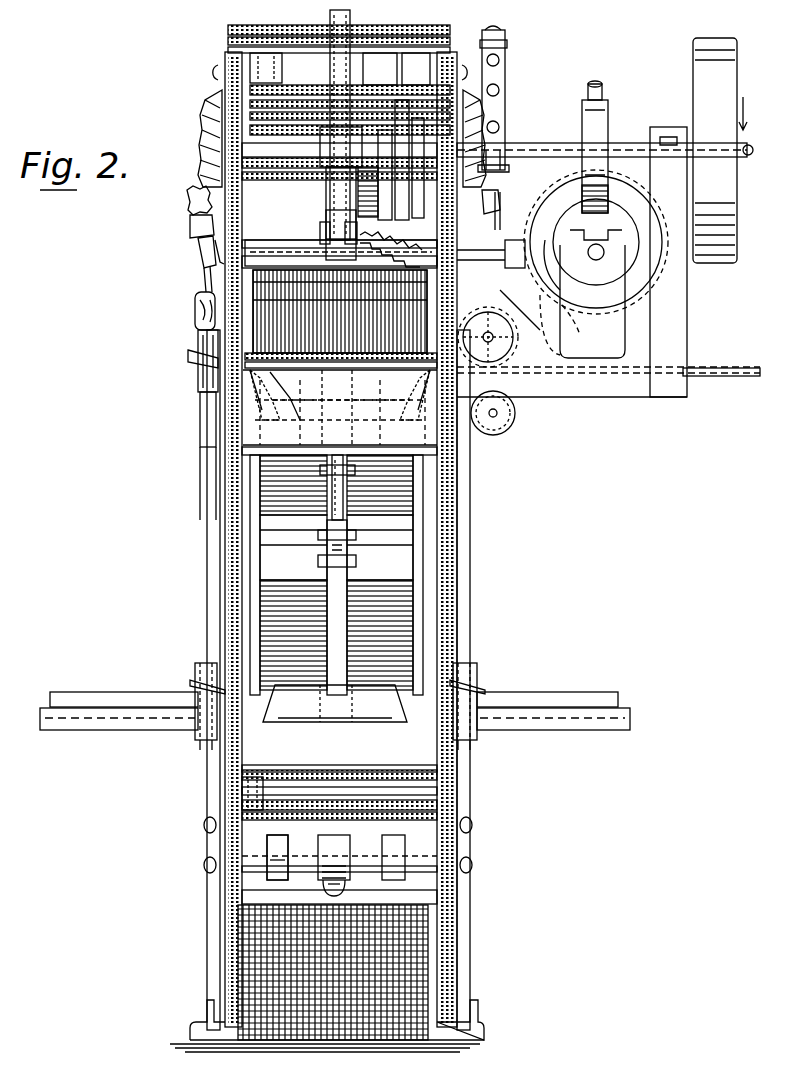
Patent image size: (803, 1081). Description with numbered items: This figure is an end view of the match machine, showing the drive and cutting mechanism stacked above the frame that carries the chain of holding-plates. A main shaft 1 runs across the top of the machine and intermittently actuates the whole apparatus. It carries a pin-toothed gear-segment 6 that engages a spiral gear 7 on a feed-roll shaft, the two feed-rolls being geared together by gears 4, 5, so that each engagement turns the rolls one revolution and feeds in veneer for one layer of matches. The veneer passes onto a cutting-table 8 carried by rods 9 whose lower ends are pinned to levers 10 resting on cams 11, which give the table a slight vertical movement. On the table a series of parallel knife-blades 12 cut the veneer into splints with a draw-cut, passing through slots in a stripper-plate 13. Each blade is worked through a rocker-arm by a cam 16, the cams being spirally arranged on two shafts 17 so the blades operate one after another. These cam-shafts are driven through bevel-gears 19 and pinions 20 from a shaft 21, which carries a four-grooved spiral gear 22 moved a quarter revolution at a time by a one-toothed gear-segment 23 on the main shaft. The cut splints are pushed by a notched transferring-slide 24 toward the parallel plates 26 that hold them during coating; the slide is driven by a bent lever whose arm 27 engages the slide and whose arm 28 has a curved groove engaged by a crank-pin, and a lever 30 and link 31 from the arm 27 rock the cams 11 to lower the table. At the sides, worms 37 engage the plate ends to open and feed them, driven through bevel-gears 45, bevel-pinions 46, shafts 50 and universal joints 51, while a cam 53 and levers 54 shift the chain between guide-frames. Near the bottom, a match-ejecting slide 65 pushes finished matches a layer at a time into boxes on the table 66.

The main shaft 1 is at (552, 142).
The gear 4 is at (510, 322).
The gear 5 is at (515, 425).
The gear-segment 6 is at (505, 42).
The spiral gear 7 is at (500, 312).
The cutting-table 8 is at (405, 408).
The rods 9 is at (398, 555).
The levers 10 is at (242, 782).
The cams 11 is at (267, 835).
The knife-blades 12 is at (260, 385).
The stripper-plate 13 is at (384, 356).
The cam 16 is at (324, 226).
The shafts 17 is at (268, 236).
The bevel-gears 19 is at (558, 215).
The pinions 20 is at (525, 242).
The shaft 21 is at (592, 294).
The spiral gear 22 is at (556, 318).
The gear-segment 23 is at (606, 92).
The transferring-slide 24 is at (292, 402).
The parallel plates 26 is at (232, 27).
The lever-arm 27 is at (328, 198).
The lever-arm 28 is at (352, 14).
The lever 30 is at (350, 518).
The link 31 is at (332, 506).
The worms 37 is at (192, 354).
The bevel-gears 45 is at (203, 110).
The bevel-pinions 46 is at (188, 197).
The shafts 50 is at (205, 250).
The universal joints 51 is at (197, 312).
The cam 53 is at (378, 222).
The levers 54 is at (246, 92).
The match-ejecting slide 65 is at (335, 703).
The table 66 is at (540, 730).